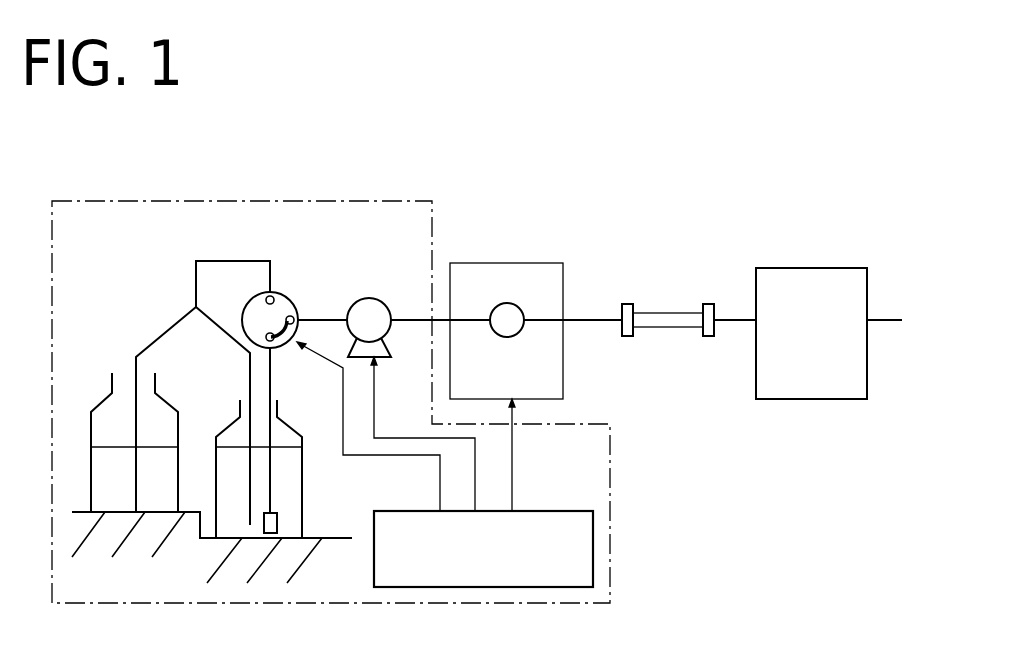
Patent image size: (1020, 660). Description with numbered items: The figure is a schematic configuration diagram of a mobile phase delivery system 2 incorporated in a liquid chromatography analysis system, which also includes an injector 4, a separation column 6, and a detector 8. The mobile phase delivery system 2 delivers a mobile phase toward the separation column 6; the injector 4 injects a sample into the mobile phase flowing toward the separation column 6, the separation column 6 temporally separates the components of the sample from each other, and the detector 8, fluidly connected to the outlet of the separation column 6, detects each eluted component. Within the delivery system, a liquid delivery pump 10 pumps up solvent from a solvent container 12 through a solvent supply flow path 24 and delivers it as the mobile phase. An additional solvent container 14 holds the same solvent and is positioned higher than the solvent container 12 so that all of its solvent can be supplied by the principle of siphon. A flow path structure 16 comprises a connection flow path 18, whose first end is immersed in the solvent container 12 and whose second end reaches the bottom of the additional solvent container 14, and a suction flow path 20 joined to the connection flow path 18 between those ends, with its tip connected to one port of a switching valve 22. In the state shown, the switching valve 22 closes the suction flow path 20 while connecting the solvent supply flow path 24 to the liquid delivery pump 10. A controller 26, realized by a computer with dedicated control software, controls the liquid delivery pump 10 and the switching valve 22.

The mobile phase delivery system 2 is at (343, 197).
The injector 4 is at (543, 262).
The separation column 6 is at (673, 313).
The detector 8 is at (818, 267).
The liquid delivery pump 10 is at (370, 297).
The solvent container 12 is at (303, 490).
The additional solvent container 14 is at (100, 403).
The flow path structure 16 is at (172, 388).
The connection flow path 18 is at (185, 410).
The suction flow path 20 is at (195, 290).
The switching valve 22 is at (285, 295).
The solvent supply flow path 24 is at (270, 377).
The controller 26 is at (530, 510).